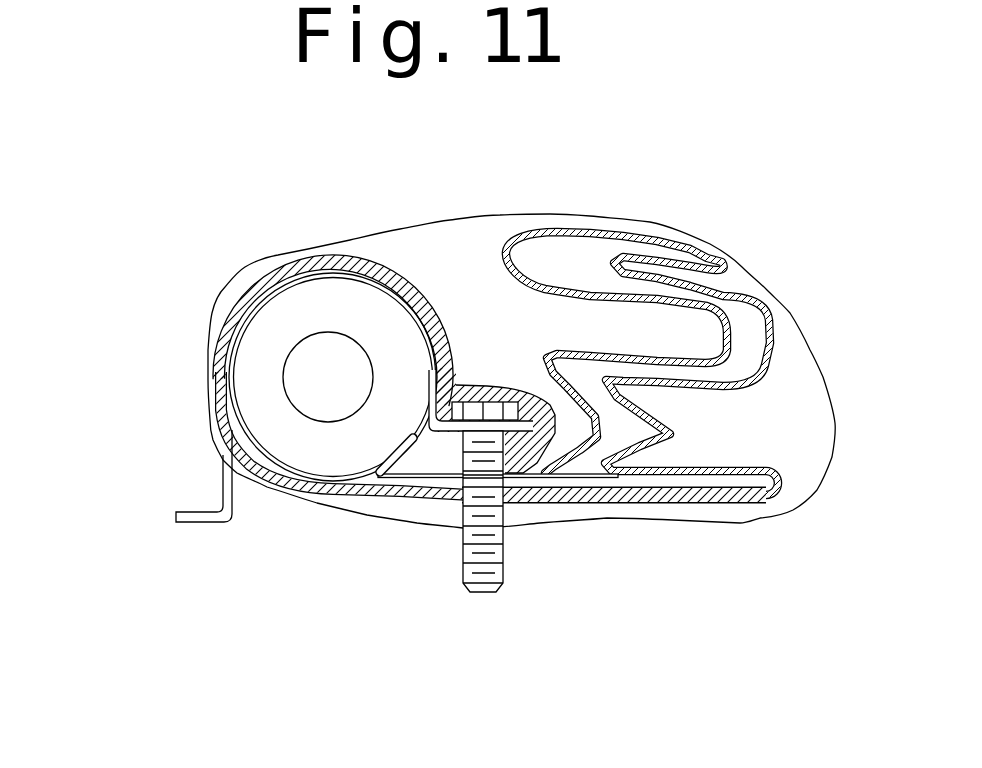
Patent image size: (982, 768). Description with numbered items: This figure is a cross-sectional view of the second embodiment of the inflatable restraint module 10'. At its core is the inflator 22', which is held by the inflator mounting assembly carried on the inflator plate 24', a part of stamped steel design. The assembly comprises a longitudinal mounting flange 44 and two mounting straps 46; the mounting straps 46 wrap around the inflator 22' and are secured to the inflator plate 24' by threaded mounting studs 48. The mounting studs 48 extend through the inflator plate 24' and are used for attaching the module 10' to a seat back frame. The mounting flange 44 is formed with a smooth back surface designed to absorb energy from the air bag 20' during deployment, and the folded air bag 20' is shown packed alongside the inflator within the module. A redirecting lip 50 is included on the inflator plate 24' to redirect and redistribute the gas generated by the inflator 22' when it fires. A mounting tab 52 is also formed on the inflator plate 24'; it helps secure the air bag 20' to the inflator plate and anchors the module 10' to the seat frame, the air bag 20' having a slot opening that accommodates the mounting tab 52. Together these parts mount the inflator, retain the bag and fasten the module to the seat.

The module 10' is at (435, 371).
The air bag 20' is at (678, 344).
The inflator 22' is at (430, 283).
The inflator plate 24' is at (614, 542).
The longitudinal mounting flange 44 is at (235, 329).
The mounting straps 46 is at (283, 277).
The threaded mounting studs 48 is at (480, 593).
The redirecting lip 50 is at (411, 443).
The mounting tab 52 is at (203, 524).